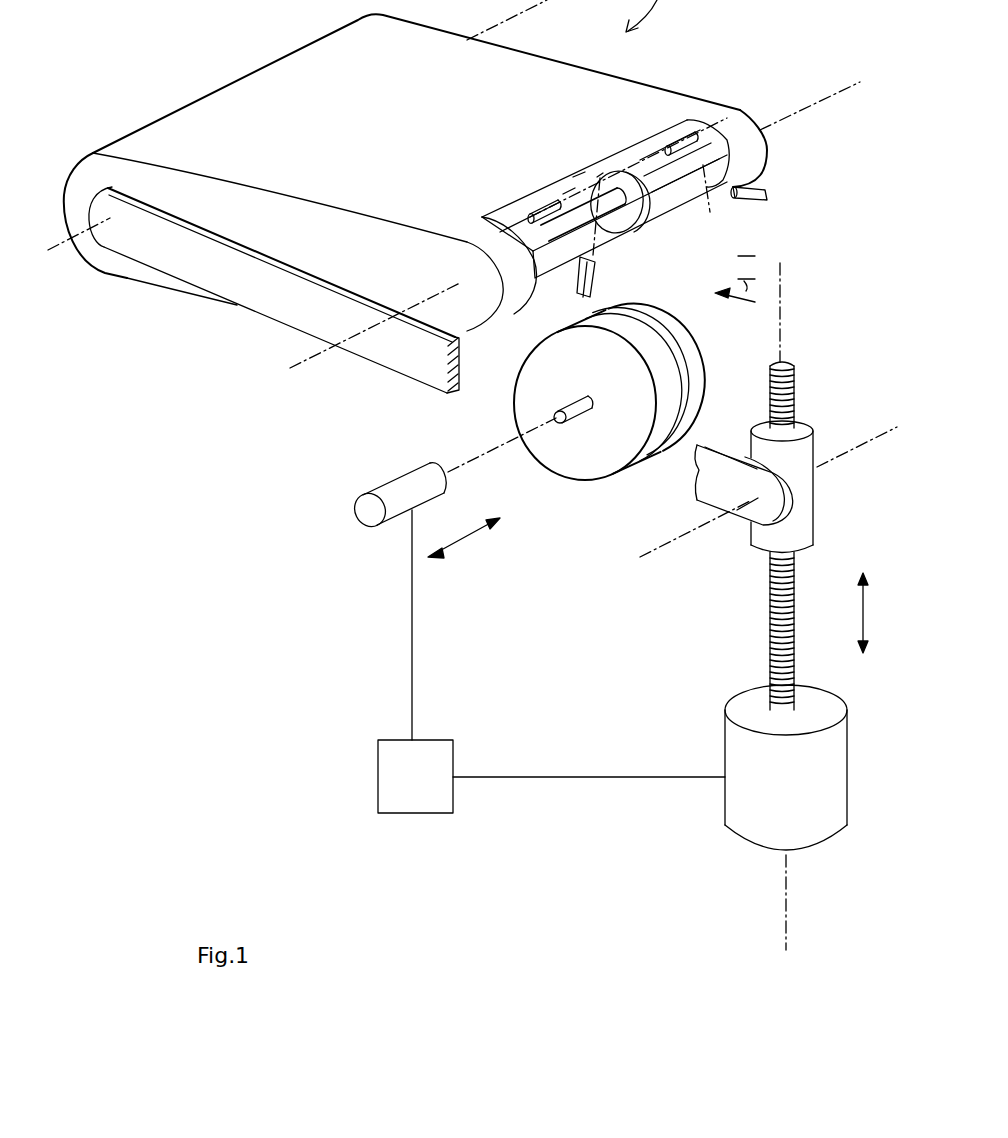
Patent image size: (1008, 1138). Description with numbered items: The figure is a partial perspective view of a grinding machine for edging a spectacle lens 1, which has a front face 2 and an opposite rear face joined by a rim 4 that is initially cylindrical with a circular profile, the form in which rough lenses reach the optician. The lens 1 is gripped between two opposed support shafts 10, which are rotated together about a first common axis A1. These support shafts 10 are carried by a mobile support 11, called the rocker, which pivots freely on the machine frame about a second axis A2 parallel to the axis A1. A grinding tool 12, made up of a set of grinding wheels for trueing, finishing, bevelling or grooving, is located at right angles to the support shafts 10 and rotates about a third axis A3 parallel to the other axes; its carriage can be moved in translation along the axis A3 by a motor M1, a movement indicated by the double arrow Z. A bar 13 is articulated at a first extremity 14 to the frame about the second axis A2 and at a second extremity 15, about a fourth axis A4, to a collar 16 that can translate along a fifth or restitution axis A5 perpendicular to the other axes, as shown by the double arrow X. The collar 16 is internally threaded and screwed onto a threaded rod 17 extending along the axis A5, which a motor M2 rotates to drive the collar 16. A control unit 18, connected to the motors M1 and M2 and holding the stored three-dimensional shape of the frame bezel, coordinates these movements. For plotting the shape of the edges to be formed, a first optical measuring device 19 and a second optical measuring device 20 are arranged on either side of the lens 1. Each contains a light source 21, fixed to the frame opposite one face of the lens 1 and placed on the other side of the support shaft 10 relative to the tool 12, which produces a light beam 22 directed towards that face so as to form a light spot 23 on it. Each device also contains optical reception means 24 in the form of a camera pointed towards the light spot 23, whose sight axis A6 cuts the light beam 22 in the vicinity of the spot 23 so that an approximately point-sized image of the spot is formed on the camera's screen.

The lens 1 is at (640, 233).
The front face 2 is at (645, 226).
The rim 4 is at (597, 177).
The support shafts 10 is at (528, 245).
The mobile support (rocker) 11 is at (257, 78).
The tool 12 is at (590, 473).
The bar 13 is at (273, 310).
The first extremity 14 is at (105, 237).
The second extremity 15 is at (746, 517).
The collar 16 is at (810, 532).
The threaded rod 17 is at (772, 627).
The control unit 18 is at (426, 793).
The first optical measuring device 19 is at (527, 206).
The second optical measuring device 20 is at (658, 141).
The light source 21 is at (528, 212).
The light beam 22 is at (563, 193).
The light spot 23 is at (573, 177).
The optical reception means (camera) 24 is at (577, 273).
The first axis A1 is at (302, 370).
The second axis A2 is at (50, 253).
The third axis A3 is at (467, 460).
The fourth axis A4 is at (837, 457).
The fifth axis (restitution axis) A5 is at (780, 280).
The sight axis A6 is at (603, 240).
The motor M1 is at (393, 487).
The motor M2 is at (837, 783).
The double arrow X is at (863, 613).
The double arrow Z is at (453, 537).